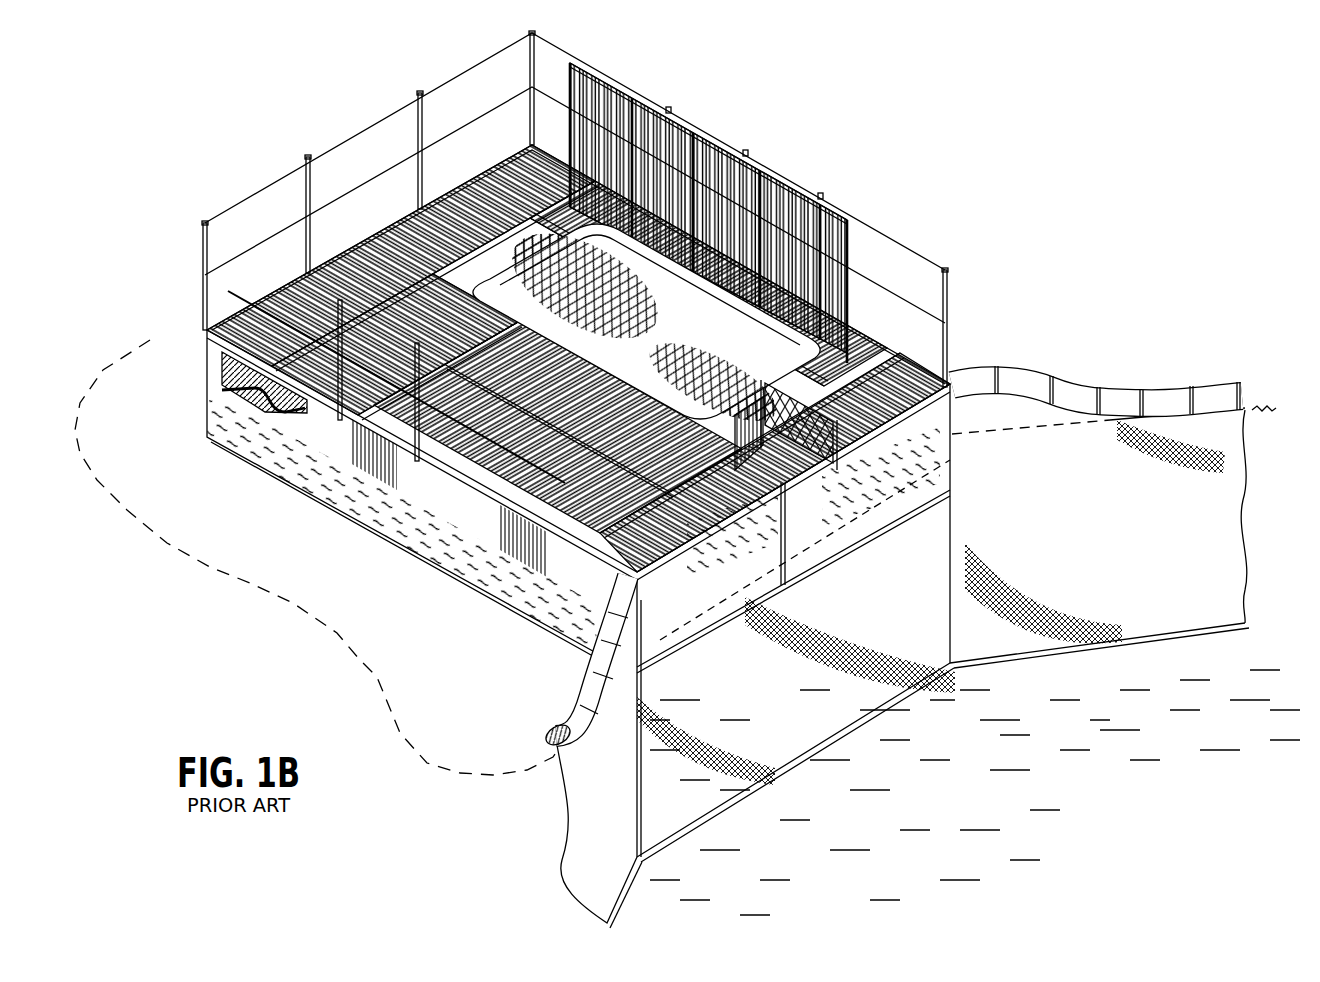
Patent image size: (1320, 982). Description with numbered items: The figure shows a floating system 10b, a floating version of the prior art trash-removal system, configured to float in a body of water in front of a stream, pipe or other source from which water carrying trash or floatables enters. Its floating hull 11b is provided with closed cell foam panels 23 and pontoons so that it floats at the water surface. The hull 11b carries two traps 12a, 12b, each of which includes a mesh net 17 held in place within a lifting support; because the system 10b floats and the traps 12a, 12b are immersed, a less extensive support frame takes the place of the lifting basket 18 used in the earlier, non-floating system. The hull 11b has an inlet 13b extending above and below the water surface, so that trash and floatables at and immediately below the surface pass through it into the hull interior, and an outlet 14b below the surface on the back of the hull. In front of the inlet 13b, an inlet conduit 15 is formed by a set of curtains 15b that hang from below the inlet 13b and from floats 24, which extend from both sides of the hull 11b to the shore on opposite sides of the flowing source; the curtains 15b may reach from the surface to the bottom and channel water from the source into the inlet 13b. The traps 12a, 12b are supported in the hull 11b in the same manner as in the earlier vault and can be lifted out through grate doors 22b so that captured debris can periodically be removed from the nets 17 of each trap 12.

The floating system 10b is at (218, 136).
The floating hull 11b is at (215, 366).
The trap 12 is at (838, 541).
The trap 12a is at (822, 484).
The trap 12b is at (654, 579).
The inlet 13b is at (822, 540).
The outlet 14b is at (357, 240).
The inlet conduit 15 is at (1240, 468).
The curtains 15b is at (732, 714).
The mesh net 17 is at (708, 354).
The lifting basket 18 is at (836, 416).
The grate doors 22b is at (848, 238).
The closed cell foam panels 23 is at (247, 390).
The floats 24 is at (1160, 402).